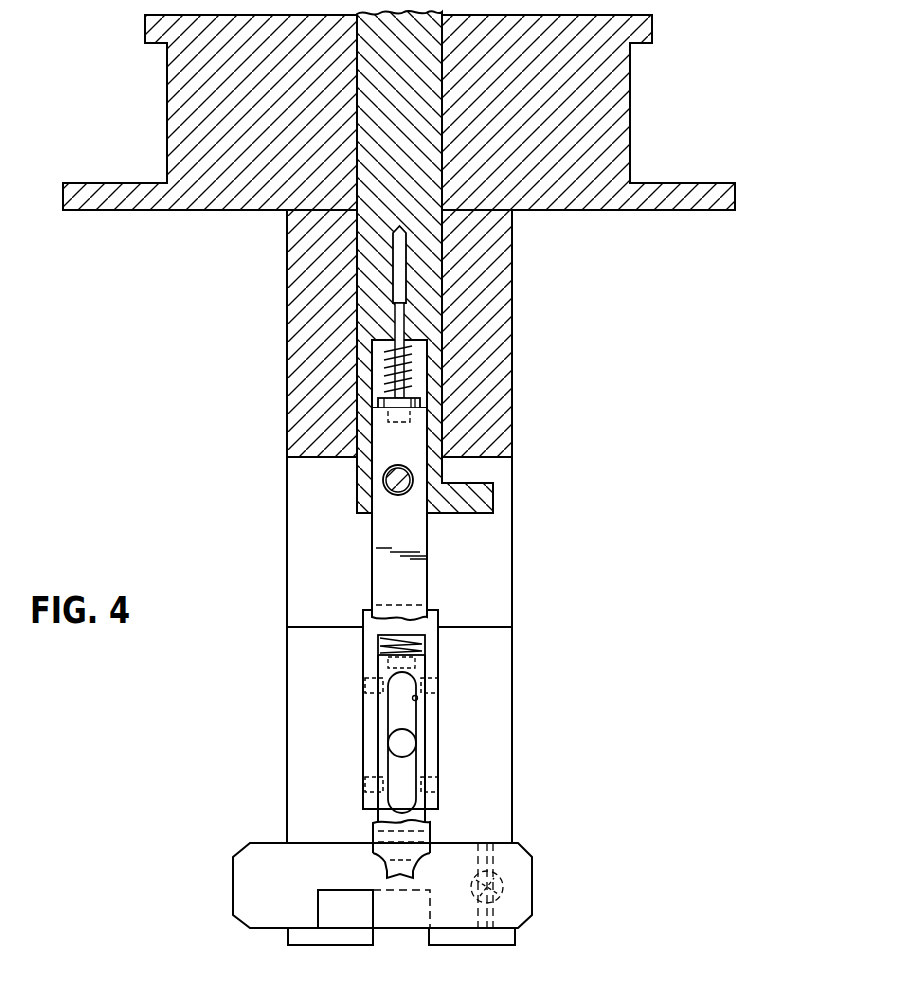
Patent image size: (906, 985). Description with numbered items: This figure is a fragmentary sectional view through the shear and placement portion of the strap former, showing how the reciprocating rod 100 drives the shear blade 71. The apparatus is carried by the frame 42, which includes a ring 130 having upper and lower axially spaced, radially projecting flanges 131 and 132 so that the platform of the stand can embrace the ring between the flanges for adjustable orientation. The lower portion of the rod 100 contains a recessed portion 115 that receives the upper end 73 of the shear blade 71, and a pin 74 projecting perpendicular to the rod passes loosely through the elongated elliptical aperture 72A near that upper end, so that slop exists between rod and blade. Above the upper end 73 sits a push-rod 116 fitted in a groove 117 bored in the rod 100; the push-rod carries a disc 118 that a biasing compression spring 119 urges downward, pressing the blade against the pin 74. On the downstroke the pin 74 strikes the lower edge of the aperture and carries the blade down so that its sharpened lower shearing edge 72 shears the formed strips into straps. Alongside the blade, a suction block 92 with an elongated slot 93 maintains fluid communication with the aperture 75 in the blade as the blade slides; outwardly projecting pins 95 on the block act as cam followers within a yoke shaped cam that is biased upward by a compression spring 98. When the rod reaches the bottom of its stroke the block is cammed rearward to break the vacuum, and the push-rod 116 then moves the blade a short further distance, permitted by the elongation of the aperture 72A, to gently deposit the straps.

The frame 42 is at (513, 434).
The shear blade 71 is at (380, 572).
The lower shearing edge 72 is at (412, 868).
The elliptical aperture 72A is at (403, 464).
The upper end of the shear blade 73 is at (420, 438).
The pin 74 is at (391, 494).
The aperture 75 is at (414, 745).
The suction block 92 is at (380, 737).
The elongated slot 93 is at (418, 700).
The pins 95 is at (365, 684).
The compression spring 98 is at (425, 645).
The rod 100 is at (362, 480).
The recessed portion 115 is at (430, 367).
The push-rod 116 is at (408, 318).
The groove 117 is at (405, 258).
The disc 118 is at (378, 400).
The biasing compression spring 119 is at (392, 353).
The ring 130 is at (628, 95).
The upper flange 131 is at (648, 34).
The lower flange 132 is at (732, 200).